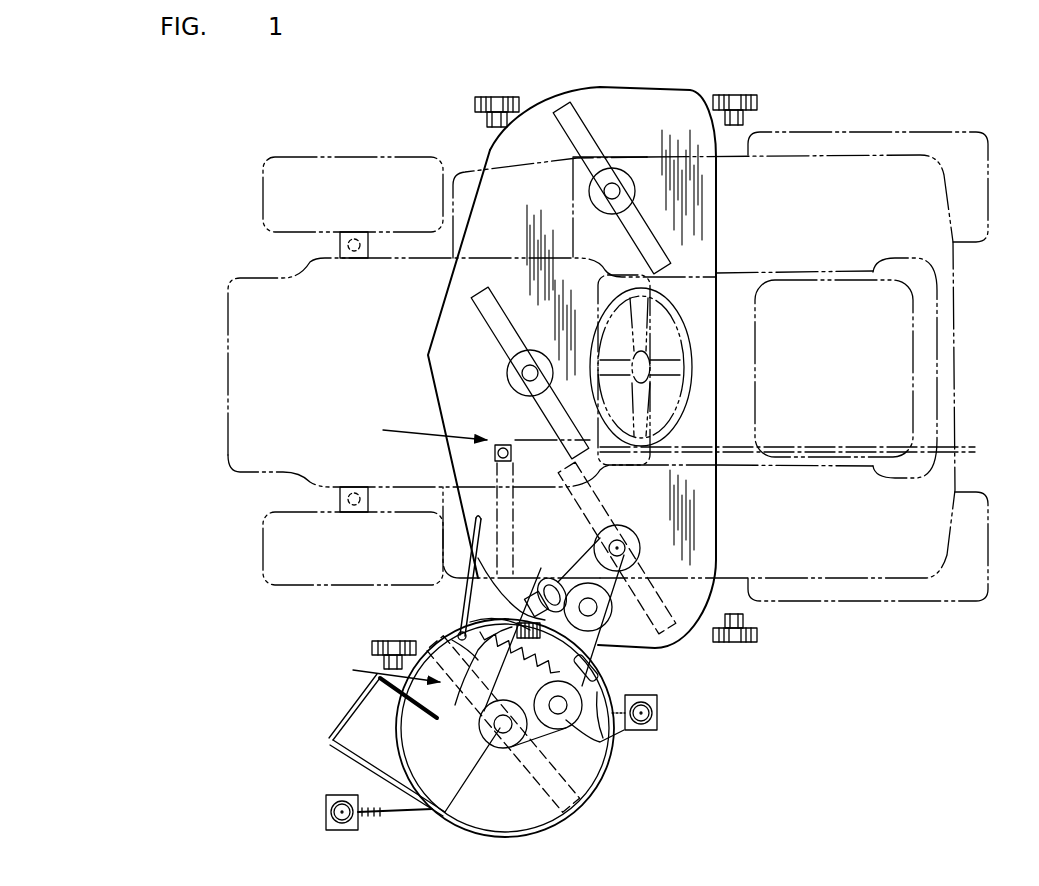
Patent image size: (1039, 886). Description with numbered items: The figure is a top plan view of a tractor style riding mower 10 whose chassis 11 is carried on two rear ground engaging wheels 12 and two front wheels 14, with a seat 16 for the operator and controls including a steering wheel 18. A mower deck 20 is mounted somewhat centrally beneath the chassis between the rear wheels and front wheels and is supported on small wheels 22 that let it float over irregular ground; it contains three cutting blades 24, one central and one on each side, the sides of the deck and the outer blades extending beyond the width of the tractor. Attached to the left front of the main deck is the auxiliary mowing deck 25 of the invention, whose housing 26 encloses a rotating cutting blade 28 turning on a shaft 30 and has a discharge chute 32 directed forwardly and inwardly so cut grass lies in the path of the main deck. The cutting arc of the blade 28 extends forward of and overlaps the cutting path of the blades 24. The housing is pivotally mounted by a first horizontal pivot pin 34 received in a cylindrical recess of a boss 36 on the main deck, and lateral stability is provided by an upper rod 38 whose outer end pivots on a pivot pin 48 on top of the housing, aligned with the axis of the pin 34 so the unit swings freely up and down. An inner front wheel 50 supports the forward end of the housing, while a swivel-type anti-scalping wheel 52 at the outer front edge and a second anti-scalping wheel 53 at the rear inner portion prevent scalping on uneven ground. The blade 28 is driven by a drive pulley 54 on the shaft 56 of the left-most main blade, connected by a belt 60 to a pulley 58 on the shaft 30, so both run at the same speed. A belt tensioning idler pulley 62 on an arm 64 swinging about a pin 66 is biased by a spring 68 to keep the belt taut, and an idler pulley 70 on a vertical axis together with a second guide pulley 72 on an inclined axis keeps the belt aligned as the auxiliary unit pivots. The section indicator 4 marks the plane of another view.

The tractor style riding mower 10 is at (218, 297).
The chassis 11 is at (255, 473).
The rear ground engaging wheels 12 is at (893, 135).
The front wheels 14 is at (365, 157).
The seat 16 is at (960, 365).
The steering wheel 18 is at (695, 366).
The mower deck 20 is at (604, 88).
The small wheels 22 is at (497, 97).
The cutting blades 24 is at (597, 118).
The auxiliary mowing deck 25 is at (320, 742).
The housing 26 is at (460, 832).
The cutting blade 28 is at (568, 815).
The shaft 30 is at (503, 735).
The discharge chute 32 is at (345, 712).
The first horizontal pivot pin 34 is at (470, 605).
The boss 36 is at (602, 663).
The upper rod 38 is at (470, 628).
The pivot pin 48 is at (452, 640).
The inner front wheel 50 is at (393, 641).
The anti-scalping wheel 52 is at (326, 812).
The second anti-scalping wheel 53 is at (657, 720).
The drive pulley 54 is at (619, 540).
The shaft 56 is at (640, 547).
The pulley 58 is at (500, 728).
The belt 60 is at (585, 772).
The belt tensioning idler pulley 62 is at (614, 732).
The arm 64 is at (650, 690).
The pin 66 is at (600, 692).
The spring 68 is at (498, 687).
The idler pulley 70 is at (606, 618).
The second guide pulley 72 is at (548, 578).
The section line 4- 4 is at (420, 567).